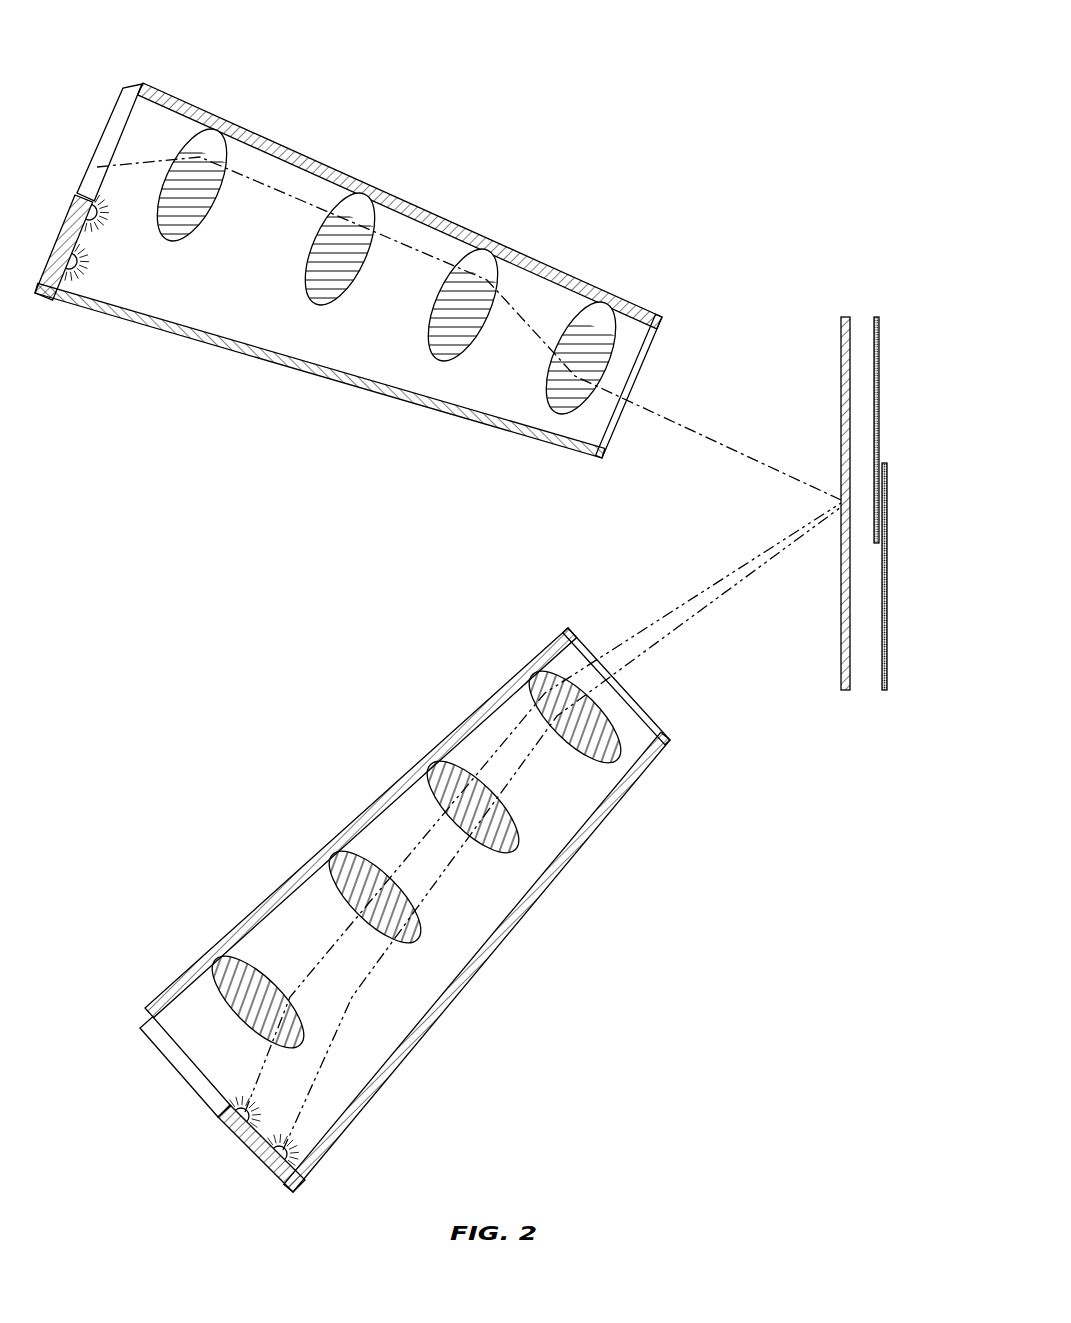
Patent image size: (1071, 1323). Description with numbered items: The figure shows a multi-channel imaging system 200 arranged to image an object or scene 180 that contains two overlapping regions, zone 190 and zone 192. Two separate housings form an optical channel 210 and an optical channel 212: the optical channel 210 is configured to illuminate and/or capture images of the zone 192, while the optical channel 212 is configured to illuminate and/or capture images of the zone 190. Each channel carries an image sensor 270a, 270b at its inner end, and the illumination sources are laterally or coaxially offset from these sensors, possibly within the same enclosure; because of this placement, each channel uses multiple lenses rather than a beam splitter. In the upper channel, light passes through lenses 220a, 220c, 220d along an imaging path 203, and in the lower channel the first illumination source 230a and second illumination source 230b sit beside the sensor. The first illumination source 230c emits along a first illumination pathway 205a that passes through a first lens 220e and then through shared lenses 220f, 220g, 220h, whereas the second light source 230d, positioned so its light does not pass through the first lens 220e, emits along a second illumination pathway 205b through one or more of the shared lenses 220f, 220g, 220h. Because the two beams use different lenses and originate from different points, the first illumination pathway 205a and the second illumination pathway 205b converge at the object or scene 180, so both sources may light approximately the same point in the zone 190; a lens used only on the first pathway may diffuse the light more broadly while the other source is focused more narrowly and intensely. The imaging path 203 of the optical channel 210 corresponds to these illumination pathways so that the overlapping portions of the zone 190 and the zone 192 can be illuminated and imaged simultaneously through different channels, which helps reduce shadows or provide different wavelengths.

The multi-channel imaging system 200 is at (878, 38).
The optical channel 210 is at (608, 142).
The optical channel 212 is at (606, 1101).
The object or scene 180 is at (841, 388).
The zone 190 is at (879, 388).
The zone 192 is at (887, 627).
The imaging path 203 is at (692, 430).
The first illumination pathway 205a is at (312, 958).
The second illumination pathway 205b is at (362, 997).
The lens 220a is at (215, 142).
The lens 220c is at (368, 205).
The lens 220d is at (614, 314).
The first lens 220e is at (215, 975).
The shared lens 220f is at (330, 880).
The shared lens 220g is at (430, 788).
The shared lens 220h is at (528, 694).
The first illumination source 230a is at (100, 226).
The second illumination source 230b is at (72, 276).
The first illumination source 230c is at (236, 1120).
The second light source 230d is at (278, 1162).
The image sensor 270a is at (102, 143).
The image sensor 270b is at (178, 1075).